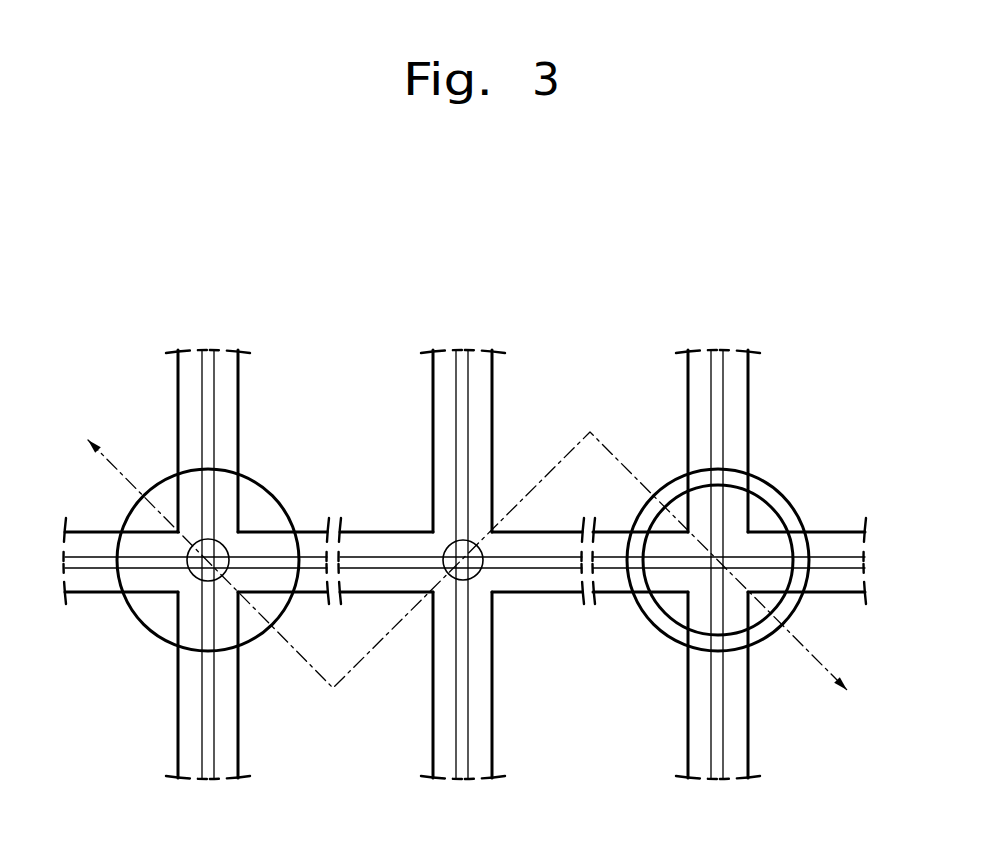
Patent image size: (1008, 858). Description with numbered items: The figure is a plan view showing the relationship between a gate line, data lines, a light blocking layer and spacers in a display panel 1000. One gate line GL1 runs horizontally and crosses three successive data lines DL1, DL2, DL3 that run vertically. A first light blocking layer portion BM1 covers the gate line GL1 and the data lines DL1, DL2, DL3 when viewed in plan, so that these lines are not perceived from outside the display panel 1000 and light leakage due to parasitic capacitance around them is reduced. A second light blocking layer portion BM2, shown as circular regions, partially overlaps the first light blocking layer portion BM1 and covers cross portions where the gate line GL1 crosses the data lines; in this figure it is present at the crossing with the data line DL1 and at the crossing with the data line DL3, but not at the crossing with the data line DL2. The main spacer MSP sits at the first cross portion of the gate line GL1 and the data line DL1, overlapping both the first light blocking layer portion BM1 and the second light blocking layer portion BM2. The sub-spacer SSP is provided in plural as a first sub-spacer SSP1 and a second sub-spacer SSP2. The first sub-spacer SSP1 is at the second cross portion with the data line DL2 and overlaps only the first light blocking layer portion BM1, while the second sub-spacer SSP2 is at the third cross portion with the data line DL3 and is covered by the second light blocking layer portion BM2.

The display panel 1000 is at (830, 334).
The first light blocking layer portion BM1 is at (188, 398).
The second light blocking layer portion BM2 is at (255, 478).
The main spacer MSP is at (222, 542).
The sub-spacer SSP is at (618, 507).
The first sub-spacer SSP1 is at (463, 540).
The second sub-spacer SSP2 is at (705, 528).
The gate line GL1 is at (93, 562).
The data line DL1 is at (210, 737).
The data line DL2 is at (464, 738).
The data line DL3 is at (720, 737).